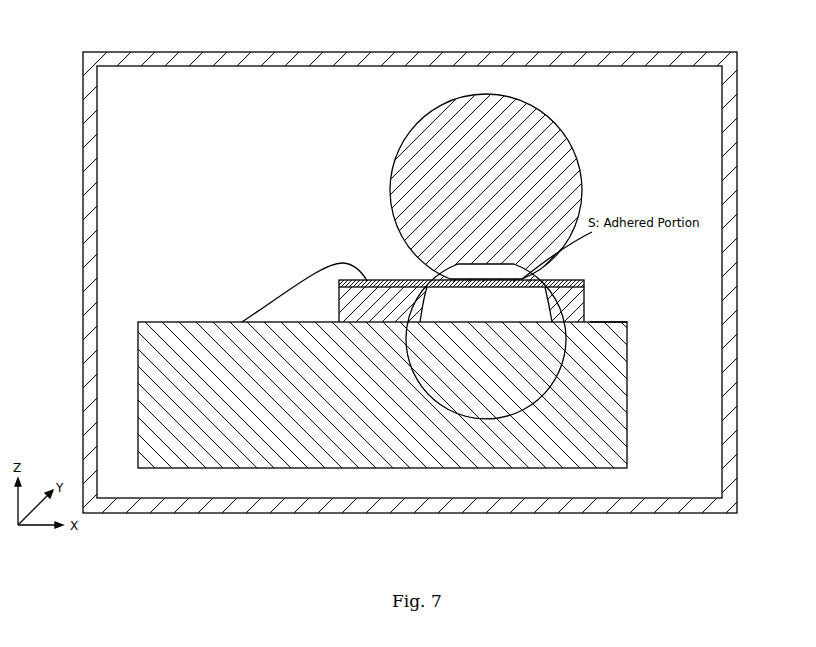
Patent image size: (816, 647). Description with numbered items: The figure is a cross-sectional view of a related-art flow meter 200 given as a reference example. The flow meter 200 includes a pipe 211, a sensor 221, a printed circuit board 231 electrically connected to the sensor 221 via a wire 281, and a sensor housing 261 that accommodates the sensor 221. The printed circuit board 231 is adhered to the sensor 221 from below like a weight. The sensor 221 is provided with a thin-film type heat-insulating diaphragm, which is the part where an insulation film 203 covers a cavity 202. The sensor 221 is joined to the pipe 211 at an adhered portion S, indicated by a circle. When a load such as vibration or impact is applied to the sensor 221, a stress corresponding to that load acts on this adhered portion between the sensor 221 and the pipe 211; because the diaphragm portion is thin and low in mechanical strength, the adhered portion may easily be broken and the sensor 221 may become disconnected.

The flow meter 200 is at (63, 60).
The sensor housing 261 is at (635, 51).
The pipe 211 is at (553, 125).
The insulation film 203 is at (584, 280).
The cavity 202 is at (533, 305).
The sensor 221 is at (598, 314).
The printed circuit board 231 is at (200, 321).
The wire 281 is at (364, 267).